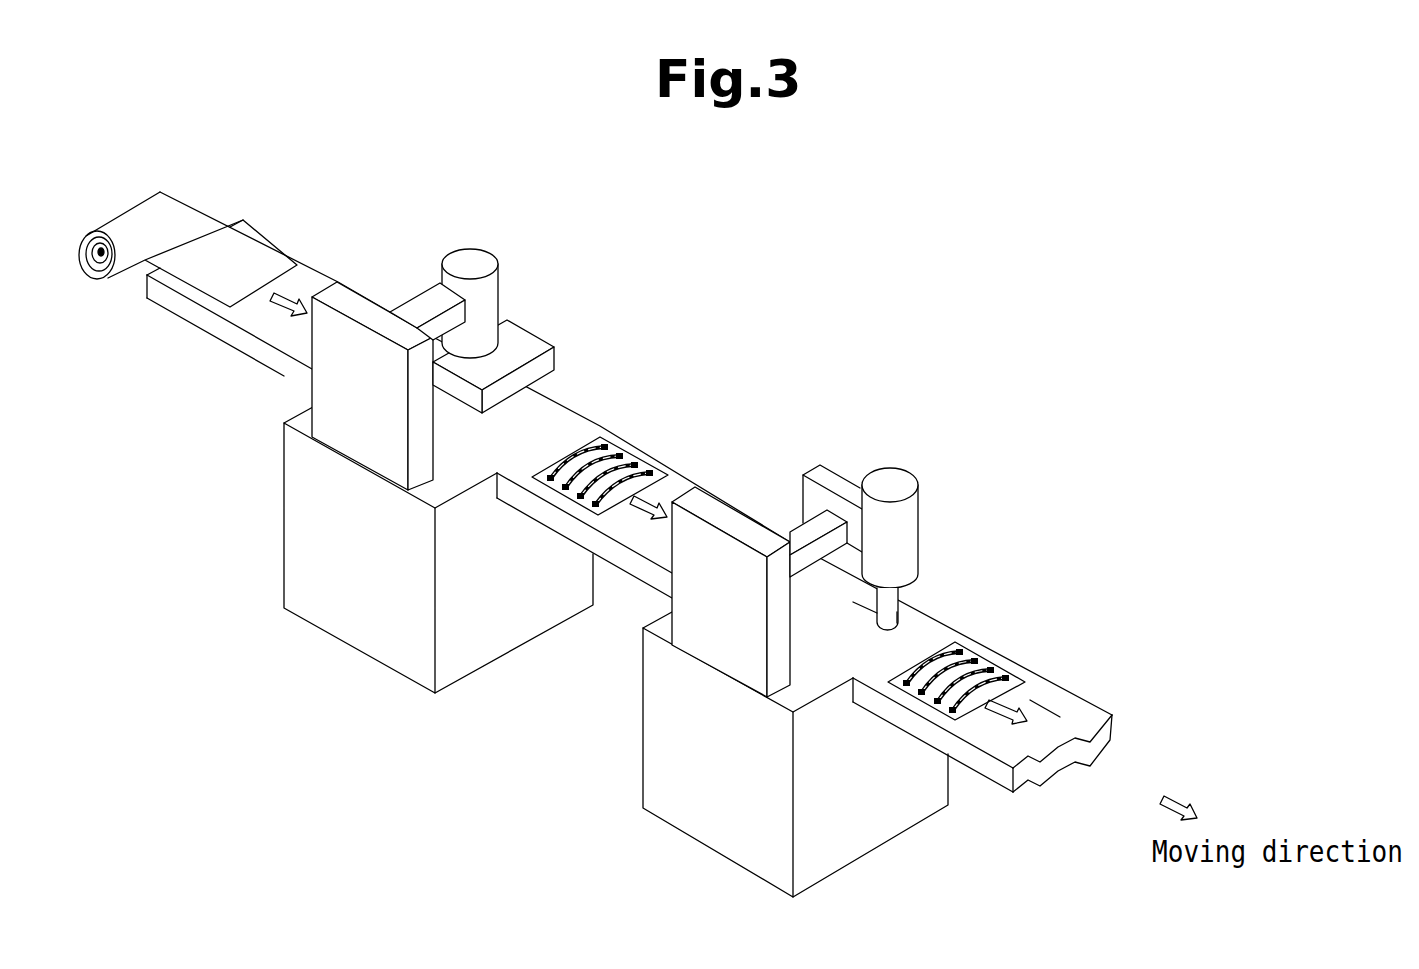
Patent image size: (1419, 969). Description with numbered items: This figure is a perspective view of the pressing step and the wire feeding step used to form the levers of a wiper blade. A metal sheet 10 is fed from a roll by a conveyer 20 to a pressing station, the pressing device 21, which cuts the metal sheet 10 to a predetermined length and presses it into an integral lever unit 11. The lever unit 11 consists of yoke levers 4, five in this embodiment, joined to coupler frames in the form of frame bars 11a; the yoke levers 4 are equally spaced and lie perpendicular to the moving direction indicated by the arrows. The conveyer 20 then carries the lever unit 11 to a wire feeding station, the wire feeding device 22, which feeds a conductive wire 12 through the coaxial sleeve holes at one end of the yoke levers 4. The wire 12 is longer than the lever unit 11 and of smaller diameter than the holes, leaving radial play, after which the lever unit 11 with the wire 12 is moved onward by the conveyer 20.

The metal sheet 10 is at (193, 214).
The conveyer 20 is at (233, 339).
The pressing device 21 is at (341, 625).
The wire feeding device 22 is at (700, 828).
The integral lever unit 11 is at (688, 375).
The yoke levers 4 is at (578, 447).
The frame bars 11a is at (630, 455).
The wire 12 is at (1040, 705).